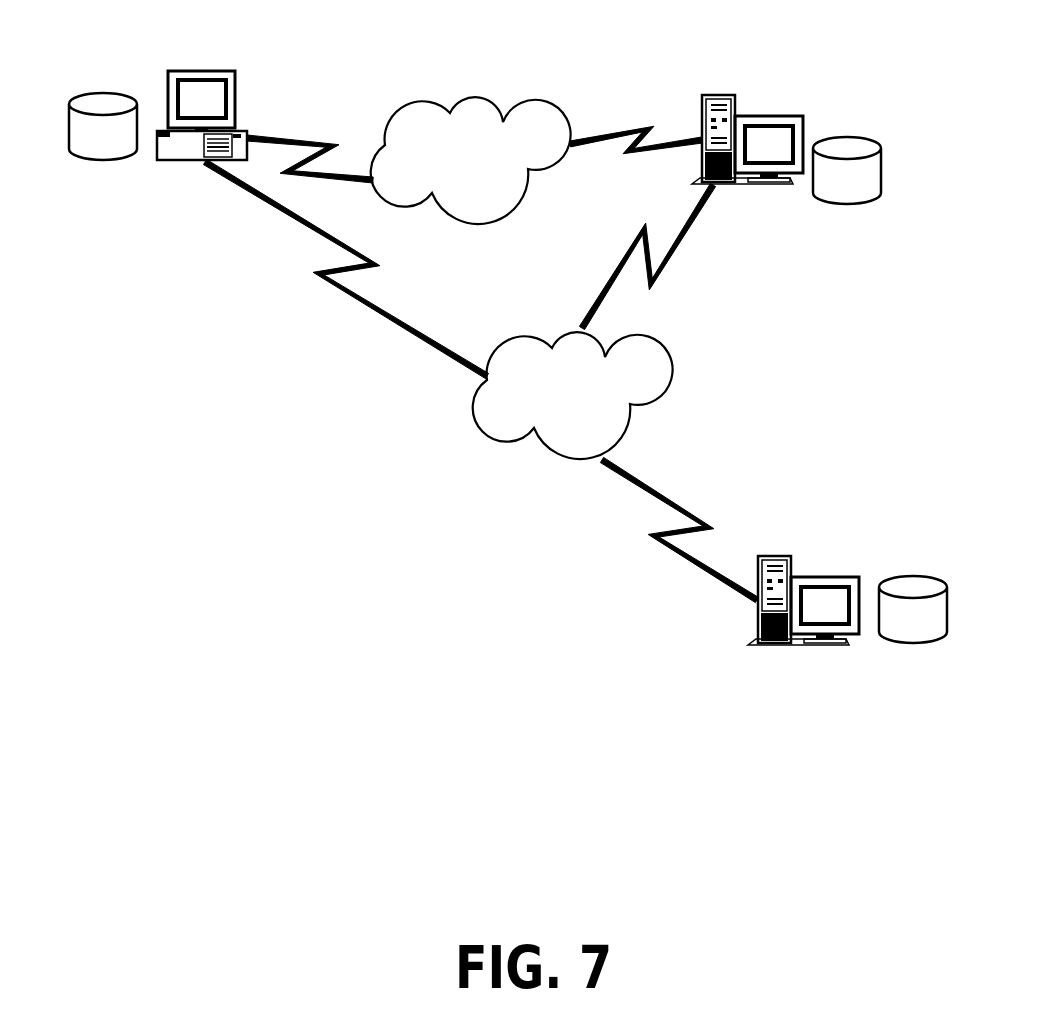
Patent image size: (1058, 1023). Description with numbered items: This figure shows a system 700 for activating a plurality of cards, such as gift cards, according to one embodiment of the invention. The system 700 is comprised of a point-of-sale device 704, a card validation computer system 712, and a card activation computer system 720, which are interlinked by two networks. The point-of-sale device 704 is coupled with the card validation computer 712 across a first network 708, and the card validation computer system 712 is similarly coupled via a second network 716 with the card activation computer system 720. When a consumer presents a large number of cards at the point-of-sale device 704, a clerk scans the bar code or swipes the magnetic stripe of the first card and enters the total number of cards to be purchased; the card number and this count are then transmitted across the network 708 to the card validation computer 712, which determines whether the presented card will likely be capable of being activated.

The system 700 is at (880, 458).
The point-of-sale device 704 is at (207, 70).
The network 708 is at (482, 167).
The card validation computer system 712 is at (773, 115).
The network 716 is at (593, 397).
The card activation computer system 720 is at (827, 577).